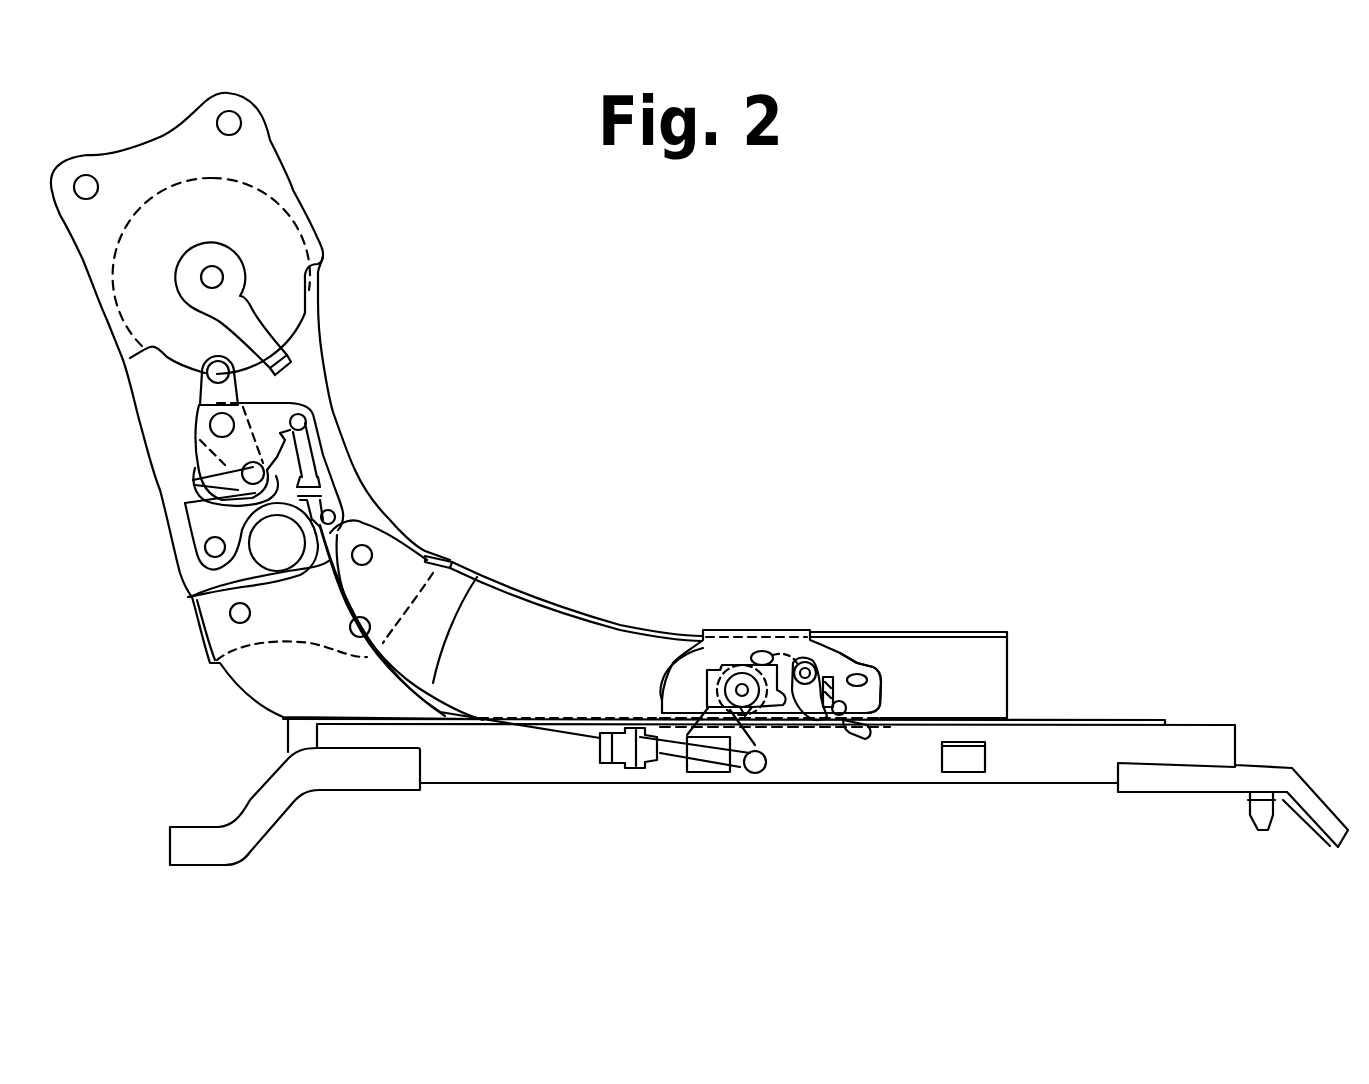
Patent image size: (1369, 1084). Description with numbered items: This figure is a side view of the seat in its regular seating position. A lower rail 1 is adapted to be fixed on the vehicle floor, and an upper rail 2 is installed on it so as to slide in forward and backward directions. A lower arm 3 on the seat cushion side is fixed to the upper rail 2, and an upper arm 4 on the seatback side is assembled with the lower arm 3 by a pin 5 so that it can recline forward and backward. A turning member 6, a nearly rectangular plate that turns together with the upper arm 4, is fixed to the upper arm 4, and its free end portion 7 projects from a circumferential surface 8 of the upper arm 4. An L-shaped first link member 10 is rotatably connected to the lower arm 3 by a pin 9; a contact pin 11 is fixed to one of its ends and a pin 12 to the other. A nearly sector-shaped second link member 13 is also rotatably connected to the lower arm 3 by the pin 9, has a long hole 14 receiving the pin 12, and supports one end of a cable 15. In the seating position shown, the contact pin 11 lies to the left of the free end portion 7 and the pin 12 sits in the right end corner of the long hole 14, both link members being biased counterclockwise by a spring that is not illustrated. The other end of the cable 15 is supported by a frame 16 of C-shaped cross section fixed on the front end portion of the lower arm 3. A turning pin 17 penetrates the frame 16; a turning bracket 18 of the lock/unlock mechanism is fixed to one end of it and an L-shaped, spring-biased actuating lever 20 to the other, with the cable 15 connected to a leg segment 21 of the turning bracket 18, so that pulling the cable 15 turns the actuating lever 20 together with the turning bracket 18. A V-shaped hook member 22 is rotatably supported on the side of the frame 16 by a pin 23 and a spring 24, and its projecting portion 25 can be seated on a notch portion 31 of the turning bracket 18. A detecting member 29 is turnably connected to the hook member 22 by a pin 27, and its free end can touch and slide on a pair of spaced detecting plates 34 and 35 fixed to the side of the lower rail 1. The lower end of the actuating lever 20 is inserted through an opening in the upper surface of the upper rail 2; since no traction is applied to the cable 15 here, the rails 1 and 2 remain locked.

The lower rail 1 is at (1060, 778).
The upper rail 2 is at (1090, 720).
The lower arm 3 is at (972, 633).
The upper arm 4 is at (300, 202).
The pin 5 is at (222, 274).
The turning member 6 is at (268, 310).
The free end portion 7 is at (282, 364).
The circumferential surface 8 is at (287, 323).
The pin 9 is at (213, 427).
The first link member 10 is at (207, 393).
The contact pin 11 is at (204, 372).
The pin 12 is at (197, 513).
The second link member 13 is at (243, 475).
The long hole 14 is at (200, 483).
The cable 15 is at (433, 680).
The frame 16 is at (700, 660).
The turning pin 17 is at (740, 667).
The turning bracket 18 is at (670, 680).
The actuating lever 20 is at (777, 653).
The leg segment 21 is at (752, 775).
The hook member 22 is at (799, 662).
The pin 23 is at (812, 668).
The spring 24 is at (835, 672).
The projecting portion 25 is at (815, 728).
The pin 27 is at (840, 728).
The detecting member 29 is at (863, 733).
The notch portion 31 is at (782, 728).
The detecting plate 34 is at (963, 767).
The detecting plate 35 is at (703, 773).